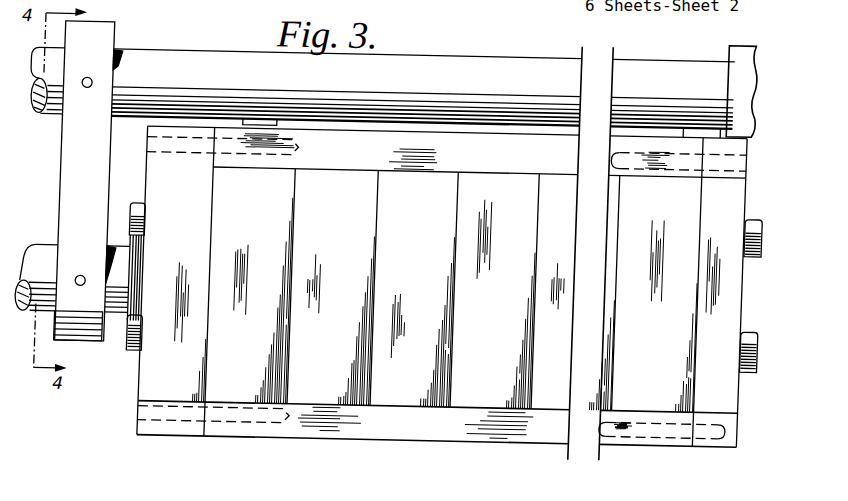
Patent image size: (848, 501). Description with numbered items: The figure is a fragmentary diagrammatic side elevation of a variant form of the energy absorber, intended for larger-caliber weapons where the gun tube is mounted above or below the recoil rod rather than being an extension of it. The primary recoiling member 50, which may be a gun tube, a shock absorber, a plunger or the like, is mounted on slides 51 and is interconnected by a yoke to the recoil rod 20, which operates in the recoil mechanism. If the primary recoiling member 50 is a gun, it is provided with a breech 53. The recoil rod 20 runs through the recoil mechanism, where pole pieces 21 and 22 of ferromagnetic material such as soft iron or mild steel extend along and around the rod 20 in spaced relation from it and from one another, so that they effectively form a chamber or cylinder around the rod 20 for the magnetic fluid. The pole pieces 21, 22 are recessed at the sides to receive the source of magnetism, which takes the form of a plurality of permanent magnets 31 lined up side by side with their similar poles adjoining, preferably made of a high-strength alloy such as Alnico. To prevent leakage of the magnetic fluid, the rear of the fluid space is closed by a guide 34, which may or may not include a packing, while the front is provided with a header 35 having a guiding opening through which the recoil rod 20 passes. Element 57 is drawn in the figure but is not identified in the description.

The rod 20 is at (119, 296).
The pole piece 21 is at (446, 148).
The pole piece 22 is at (437, 424).
The permanent magnets 31 is at (459, 287).
The guide 34 is at (741, 416).
The header 35 is at (176, 281).
The primary recoiling member 50 is at (243, 55).
The slides 51 is at (418, 127).
The breech 53 is at (746, 65).
The bracket plate 57 is at (59, 184).